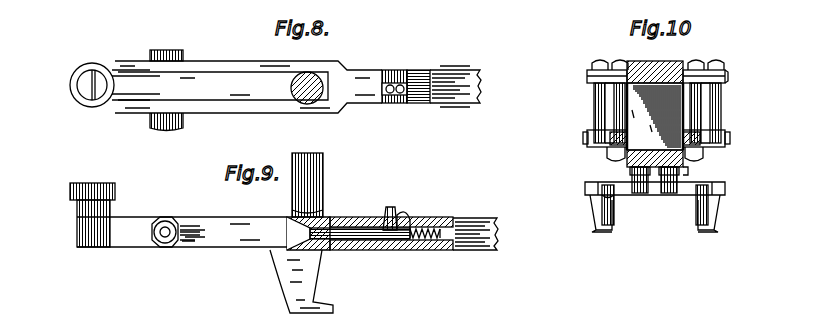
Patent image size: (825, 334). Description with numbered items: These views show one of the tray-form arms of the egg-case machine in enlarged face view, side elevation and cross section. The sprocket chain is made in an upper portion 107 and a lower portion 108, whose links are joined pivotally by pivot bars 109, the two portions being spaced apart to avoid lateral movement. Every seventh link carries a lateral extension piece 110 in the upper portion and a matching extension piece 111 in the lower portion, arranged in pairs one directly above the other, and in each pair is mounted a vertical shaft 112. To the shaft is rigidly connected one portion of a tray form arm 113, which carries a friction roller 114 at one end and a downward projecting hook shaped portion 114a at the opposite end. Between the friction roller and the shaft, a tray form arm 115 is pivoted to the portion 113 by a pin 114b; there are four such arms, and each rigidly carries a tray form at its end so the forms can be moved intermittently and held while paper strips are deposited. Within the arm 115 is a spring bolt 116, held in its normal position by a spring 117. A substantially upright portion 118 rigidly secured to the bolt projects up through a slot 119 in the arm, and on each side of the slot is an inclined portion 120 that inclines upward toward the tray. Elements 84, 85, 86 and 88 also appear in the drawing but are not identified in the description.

In FIG. 10, the bearing plate 84 is at (688, 170).
In FIG. 10, the fastening bolts 85 is at (655, 195).
In FIG. 10, the top plate 86 is at (632, 60).
In FIG. 10, the housing block 88 is at (643, 125).
In FIG. 10, the upper portion of sprocket chain 107 is at (724, 77).
In FIG. 10, the lower portion of sprocket chain 108 is at (592, 140).
In FIG. 10, the pivot bars 109 is at (607, 118).
In FIG. 10, the lateral extension piece 110 is at (590, 73).
In FIG. 10, the lateral extension piece 111 is at (583, 145).
In FIG. 9, the vertical shaft 112 is at (323, 182).
In FIG. 10, the vertical shaft 112 is at (600, 104).
In FIG. 8, the tray form arm portion 113 is at (222, 80).
In FIG. 9, the tray form arm portion 113 is at (120, 237).
In FIG. 10, the tray form arm portion 113 is at (605, 188).
In FIG. 8, the friction roller 114 is at (78, 75).
In FIG. 9, the friction roller 114 is at (80, 186).
In FIG. 10, the friction roller 114 is at (640, 196).
In FIG. 9, the hook shaped portion 114a is at (318, 304).
In FIG. 10, the hook shaped portion 114a is at (758, 232).
In FIG. 8, the pin 114b is at (166, 132).
In FIG. 9, the pin 114b is at (166, 240).
In FIG. 8, the tray form arm 115 is at (358, 80).
In FIG. 9, the tray form arm 115 is at (478, 247).
In FIG. 9, the spring bolt 116 is at (345, 226).
In FIG. 9, the spring 117 is at (432, 222).
In FIG. 8, the upright portion 118 is at (393, 78).
In FIG. 9, the upright portion 118 is at (392, 214).
In FIG. 8, the slot 119 is at (410, 78).
In FIG. 9, the slot 119 is at (410, 216).
In FIG. 8, the inclined portion 120 is at (390, 105).
In FIG. 9, the inclined portion 120 is at (402, 224).